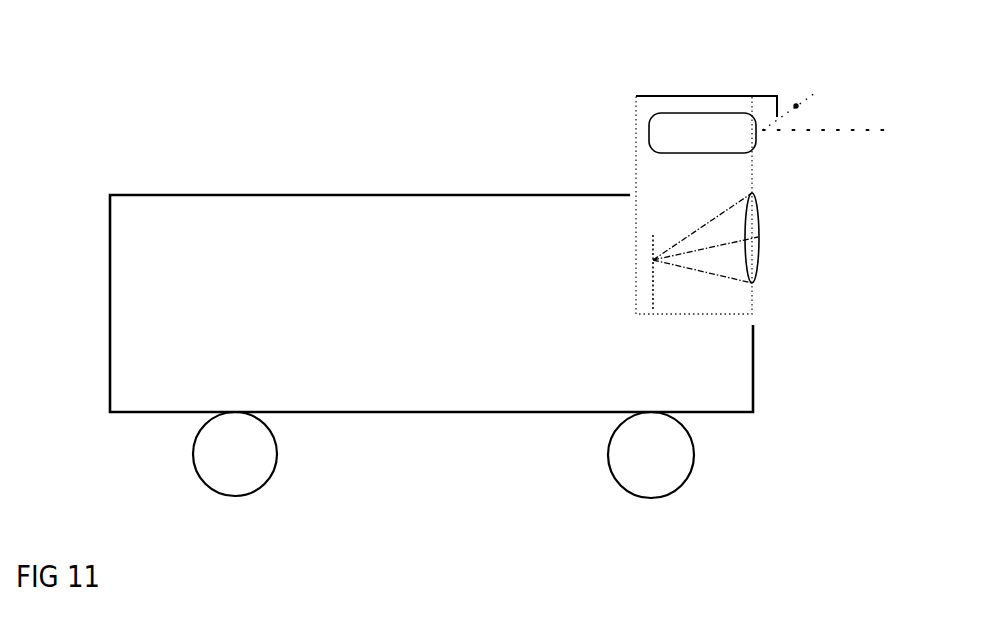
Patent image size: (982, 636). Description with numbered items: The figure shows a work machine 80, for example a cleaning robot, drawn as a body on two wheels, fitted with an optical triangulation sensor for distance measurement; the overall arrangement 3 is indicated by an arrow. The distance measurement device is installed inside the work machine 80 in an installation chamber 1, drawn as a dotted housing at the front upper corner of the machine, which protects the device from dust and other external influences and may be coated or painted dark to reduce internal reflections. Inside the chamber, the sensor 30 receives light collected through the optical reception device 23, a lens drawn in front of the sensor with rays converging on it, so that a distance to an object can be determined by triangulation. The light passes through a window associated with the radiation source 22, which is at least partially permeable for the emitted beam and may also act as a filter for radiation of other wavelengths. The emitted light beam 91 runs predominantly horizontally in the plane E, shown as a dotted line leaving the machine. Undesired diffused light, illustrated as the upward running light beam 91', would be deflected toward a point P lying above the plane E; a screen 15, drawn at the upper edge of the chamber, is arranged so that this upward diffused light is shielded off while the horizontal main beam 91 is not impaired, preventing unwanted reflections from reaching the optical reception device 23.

The sensor arrangement / system 3 is at (140, 123).
The work machine 80 is at (247, 195).
The housing 1 is at (636, 120).
The screen 15 is at (777, 95).
The radiation source 22 is at (757, 132).
The optical reception device 23 is at (758, 267).
The sensor 30 is at (655, 283).
The light beam 91 is at (838, 174).
The upward running light beam 91' is at (803, 78).
The point P is at (793, 95).